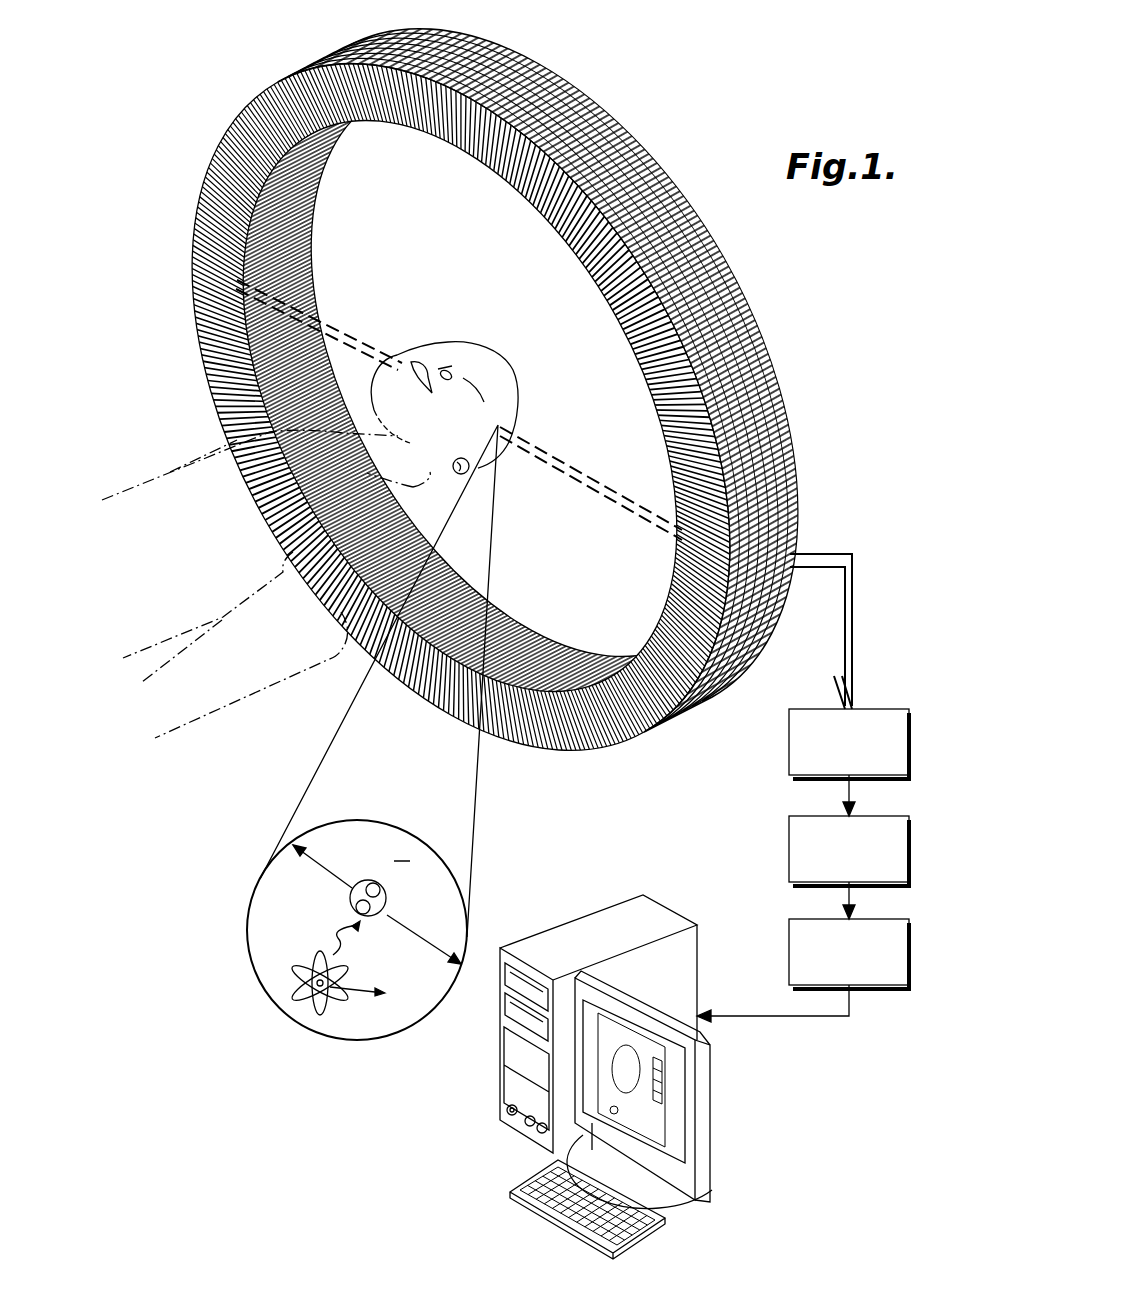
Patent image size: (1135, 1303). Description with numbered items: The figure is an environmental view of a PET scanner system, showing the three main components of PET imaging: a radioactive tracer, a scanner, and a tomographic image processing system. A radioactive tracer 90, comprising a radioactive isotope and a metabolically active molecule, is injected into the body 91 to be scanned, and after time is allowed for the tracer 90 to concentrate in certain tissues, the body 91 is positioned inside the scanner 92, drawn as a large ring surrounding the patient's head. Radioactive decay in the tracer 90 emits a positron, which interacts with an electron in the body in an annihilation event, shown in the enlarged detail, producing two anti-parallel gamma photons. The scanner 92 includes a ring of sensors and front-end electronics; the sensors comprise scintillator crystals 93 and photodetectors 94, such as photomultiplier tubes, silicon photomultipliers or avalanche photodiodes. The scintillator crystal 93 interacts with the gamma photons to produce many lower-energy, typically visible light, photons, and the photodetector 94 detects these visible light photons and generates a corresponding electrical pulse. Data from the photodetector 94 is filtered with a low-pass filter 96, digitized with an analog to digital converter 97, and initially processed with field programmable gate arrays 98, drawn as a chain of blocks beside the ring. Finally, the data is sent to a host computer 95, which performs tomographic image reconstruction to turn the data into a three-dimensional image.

The radioactive tracer 90 is at (417, 1024).
The body 91 is at (174, 456).
The scanner 92 is at (520, 432).
The scintillator crystal 93 is at (524, 686).
The photodetector 94 is at (588, 733).
The host computer 95 is at (570, 936).
The low-pass filter 96 is at (789, 742).
The analog to digital converter 97 is at (789, 845).
The field programmable gate arrays 98 is at (789, 949).